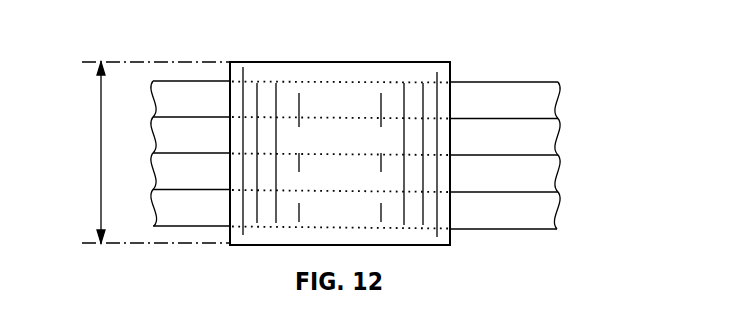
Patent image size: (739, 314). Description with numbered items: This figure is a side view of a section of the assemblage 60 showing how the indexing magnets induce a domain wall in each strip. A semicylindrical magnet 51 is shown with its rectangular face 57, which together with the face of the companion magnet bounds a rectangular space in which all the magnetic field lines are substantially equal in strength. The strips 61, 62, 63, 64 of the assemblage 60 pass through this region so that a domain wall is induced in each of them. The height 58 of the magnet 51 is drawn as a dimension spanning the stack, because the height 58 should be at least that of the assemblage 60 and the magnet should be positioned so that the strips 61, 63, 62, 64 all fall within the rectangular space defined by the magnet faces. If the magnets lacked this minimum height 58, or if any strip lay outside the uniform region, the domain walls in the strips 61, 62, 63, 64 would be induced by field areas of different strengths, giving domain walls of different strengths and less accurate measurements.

The semicylindrical magnet 51 is at (434, 62).
The rectangular face 57 is at (272, 70).
The height of the magnets 58 is at (101, 151).
The assemblage 60 is at (529, 132).
The strip 61 is at (517, 112).
The strip 62 is at (517, 186).
The strip 63 is at (517, 148).
The strip 64 is at (517, 222).